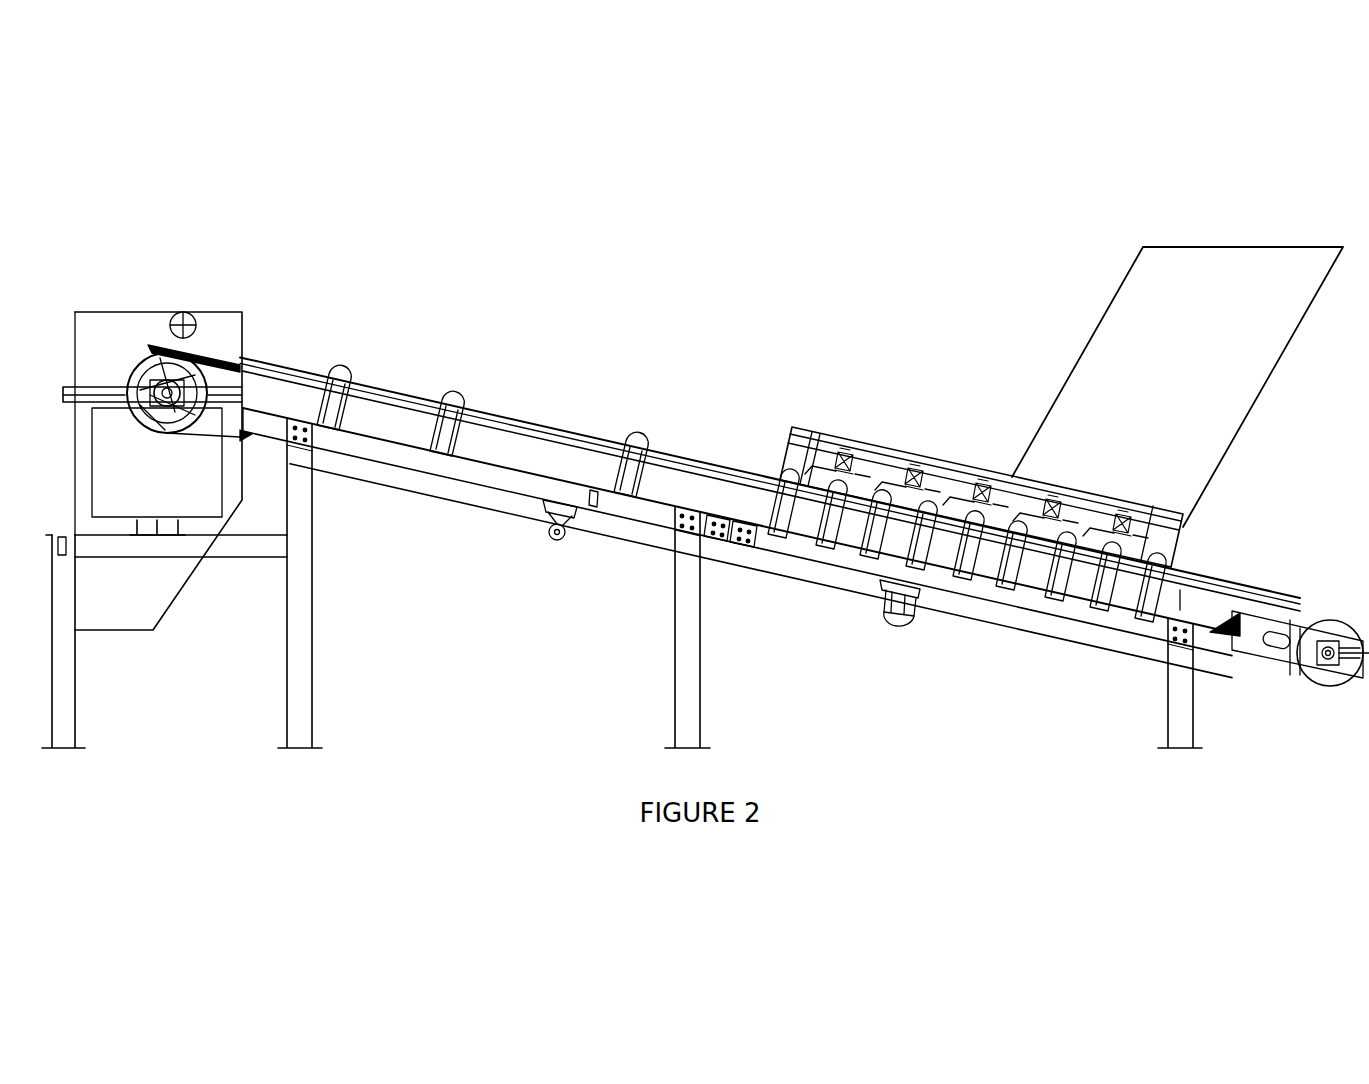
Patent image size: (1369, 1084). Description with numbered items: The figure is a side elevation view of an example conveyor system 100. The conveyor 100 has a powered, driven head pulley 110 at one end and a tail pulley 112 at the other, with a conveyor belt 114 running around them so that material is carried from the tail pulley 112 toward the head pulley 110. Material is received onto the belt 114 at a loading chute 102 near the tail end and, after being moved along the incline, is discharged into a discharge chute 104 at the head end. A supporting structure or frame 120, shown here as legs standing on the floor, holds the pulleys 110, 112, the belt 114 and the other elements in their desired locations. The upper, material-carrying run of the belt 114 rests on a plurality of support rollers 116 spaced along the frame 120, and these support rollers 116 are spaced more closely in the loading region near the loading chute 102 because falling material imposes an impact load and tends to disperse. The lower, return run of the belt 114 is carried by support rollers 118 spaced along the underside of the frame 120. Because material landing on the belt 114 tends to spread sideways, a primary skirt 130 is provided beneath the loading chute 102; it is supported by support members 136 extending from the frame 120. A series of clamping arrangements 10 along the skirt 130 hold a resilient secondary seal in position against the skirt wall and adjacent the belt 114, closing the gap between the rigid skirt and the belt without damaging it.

The conveyor system 100 is at (755, 282).
The loading chute 102 is at (1087, 342).
The discharge chute 104 is at (117, 333).
The head pulley 110 is at (187, 352).
The tail pulley 112 is at (1328, 628).
The conveyor belt 114 is at (497, 415).
The support rollers 116 is at (450, 396).
The return support rollers 118 is at (557, 541).
The support frame 120 is at (68, 667).
The primary skirt 130 is at (781, 432).
The support members 136 is at (820, 457).
The clamping arrangement 10 is at (853, 467).